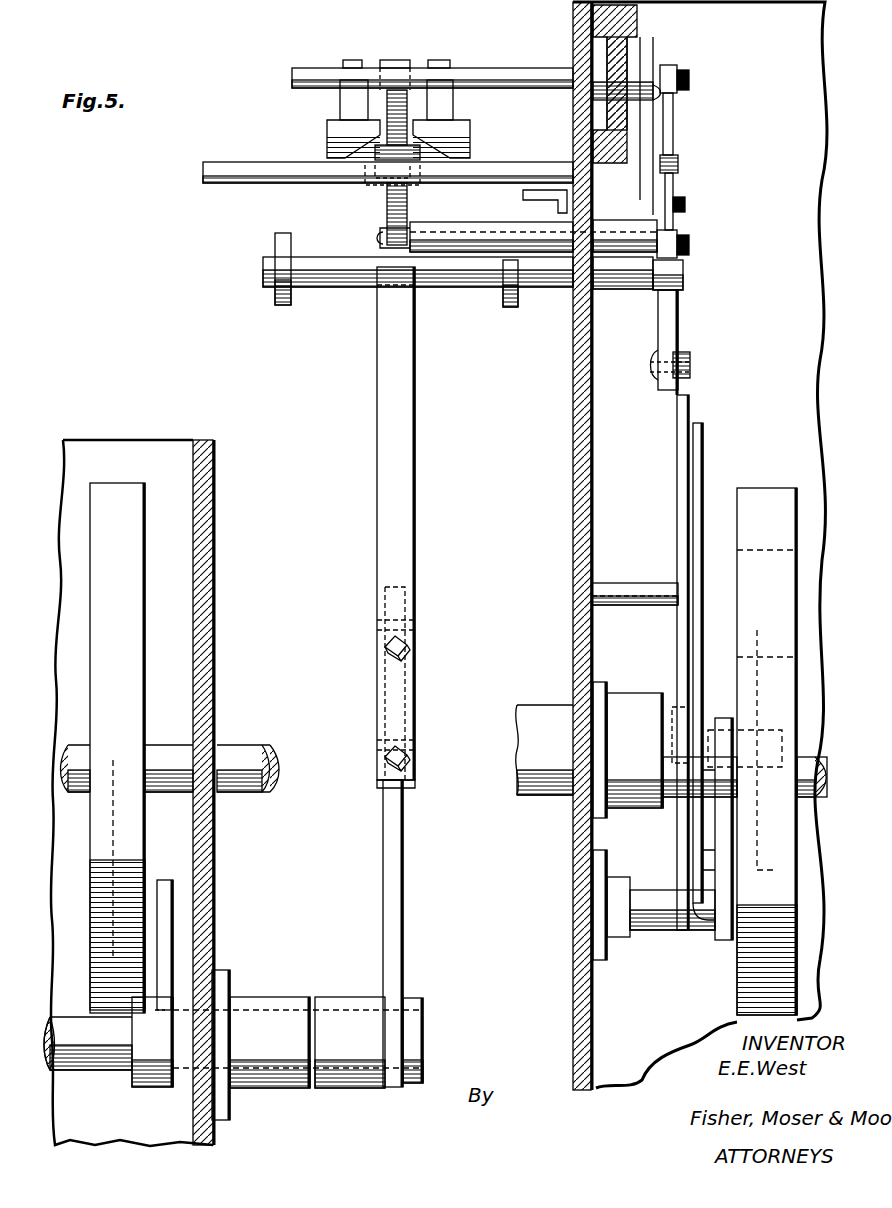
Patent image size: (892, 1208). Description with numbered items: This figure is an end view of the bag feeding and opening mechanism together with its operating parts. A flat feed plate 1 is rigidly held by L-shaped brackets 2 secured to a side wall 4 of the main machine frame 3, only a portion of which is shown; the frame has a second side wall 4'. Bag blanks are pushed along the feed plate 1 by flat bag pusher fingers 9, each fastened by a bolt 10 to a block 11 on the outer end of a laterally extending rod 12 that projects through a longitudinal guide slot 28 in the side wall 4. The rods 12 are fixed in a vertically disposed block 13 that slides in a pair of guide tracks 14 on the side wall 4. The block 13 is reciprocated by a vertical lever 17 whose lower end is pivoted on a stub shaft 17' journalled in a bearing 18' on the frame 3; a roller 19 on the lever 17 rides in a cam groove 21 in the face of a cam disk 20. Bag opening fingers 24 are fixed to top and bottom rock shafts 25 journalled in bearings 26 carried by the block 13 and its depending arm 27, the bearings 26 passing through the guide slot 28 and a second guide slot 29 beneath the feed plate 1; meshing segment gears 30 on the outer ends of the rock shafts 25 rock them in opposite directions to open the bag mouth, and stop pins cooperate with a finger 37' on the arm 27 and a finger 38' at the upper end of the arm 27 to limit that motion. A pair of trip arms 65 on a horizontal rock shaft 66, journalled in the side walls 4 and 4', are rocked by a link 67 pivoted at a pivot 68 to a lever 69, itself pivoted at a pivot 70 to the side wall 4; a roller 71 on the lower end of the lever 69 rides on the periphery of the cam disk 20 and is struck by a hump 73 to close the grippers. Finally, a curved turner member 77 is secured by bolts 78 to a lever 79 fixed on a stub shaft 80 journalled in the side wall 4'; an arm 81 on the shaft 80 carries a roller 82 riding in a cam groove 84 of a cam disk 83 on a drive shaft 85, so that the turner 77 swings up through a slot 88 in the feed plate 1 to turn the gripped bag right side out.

The feed plate 1 is at (210, 171).
The L-shaped bracket 2 is at (545, 209).
The main machine frame 3 is at (700, 545).
The side wall 4 is at (557, 546).
The side wall 4' is at (233, 886).
The bag pusher finger 9 is at (340, 142).
The bolt 10 is at (350, 60).
The block 11 is at (350, 103).
The rod 12 is at (304, 72).
The block 13 is at (620, 60).
The guide track 14 is at (630, 35).
The vertical lever 17 is at (724, 670).
The stub shaft 17' is at (688, 964).
The bearing 18' is at (615, 905).
The roller 19 is at (730, 770).
The cam disk 20 is at (770, 495).
The cam groove 21 is at (715, 853).
The bag opening finger 24 is at (398, 105).
The rock shaft 25 is at (390, 68).
The bearing 26 is at (485, 68).
The arm 27 is at (675, 185).
The guide slot 28 is at (578, 56).
The guide slot 29 is at (573, 265).
The segment gear 30 is at (678, 163).
The finger 37' is at (714, 208).
The finger 38' is at (718, 101).
The trip arm 65 is at (280, 248).
The rock shaft 66 is at (280, 270).
The link 67 is at (680, 310).
The pivot 68 is at (692, 365).
The lever 69 is at (690, 400).
The pivot 70 is at (633, 590).
The roller 71 is at (760, 730).
The hump 73 is at (748, 562).
The turner member 77 is at (385, 418).
The bolt 78 is at (410, 648).
The lever 79 is at (390, 851).
The stub shaft 80 is at (105, 1060).
The arm 81 is at (165, 945).
The roller 82 is at (150, 900).
The cam disk 83 is at (132, 793).
The cam groove 84 is at (150, 840).
The drive shaft 85 is at (238, 710).
The slot 88 is at (368, 183).